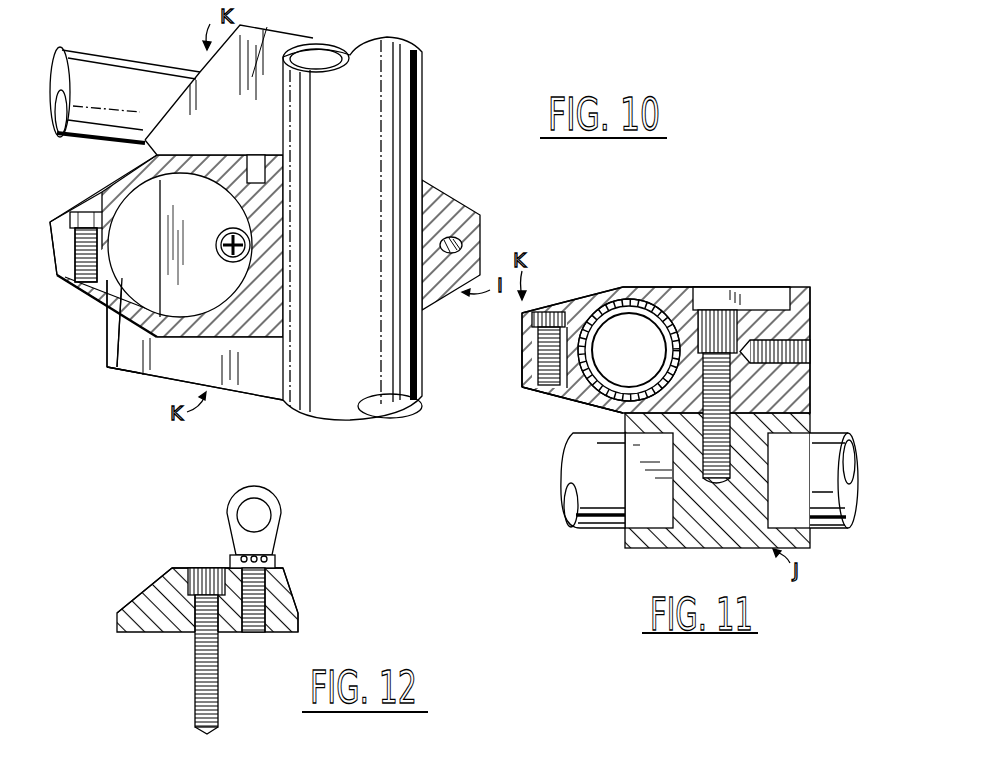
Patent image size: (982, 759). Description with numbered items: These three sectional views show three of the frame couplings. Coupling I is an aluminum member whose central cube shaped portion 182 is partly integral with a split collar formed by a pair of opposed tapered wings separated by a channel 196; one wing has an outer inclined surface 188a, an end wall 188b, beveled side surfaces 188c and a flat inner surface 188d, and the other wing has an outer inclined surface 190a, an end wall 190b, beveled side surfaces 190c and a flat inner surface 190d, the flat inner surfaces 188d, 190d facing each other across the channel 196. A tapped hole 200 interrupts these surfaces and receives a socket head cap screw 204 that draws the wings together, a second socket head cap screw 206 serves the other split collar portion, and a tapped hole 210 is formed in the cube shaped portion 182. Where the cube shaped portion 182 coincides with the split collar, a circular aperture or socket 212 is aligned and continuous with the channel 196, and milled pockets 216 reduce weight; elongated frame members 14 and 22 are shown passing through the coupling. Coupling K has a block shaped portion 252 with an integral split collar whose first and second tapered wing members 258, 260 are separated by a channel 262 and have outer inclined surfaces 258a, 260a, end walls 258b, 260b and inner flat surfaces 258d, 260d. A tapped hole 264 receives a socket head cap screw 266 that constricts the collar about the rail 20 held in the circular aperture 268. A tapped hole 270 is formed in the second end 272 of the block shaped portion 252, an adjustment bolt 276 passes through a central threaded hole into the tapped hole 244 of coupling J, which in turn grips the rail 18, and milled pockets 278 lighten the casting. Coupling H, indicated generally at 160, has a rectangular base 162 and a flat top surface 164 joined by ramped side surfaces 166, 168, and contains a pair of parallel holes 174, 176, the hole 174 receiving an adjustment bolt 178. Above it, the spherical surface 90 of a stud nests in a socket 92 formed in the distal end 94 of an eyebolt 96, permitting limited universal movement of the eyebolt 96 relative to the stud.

In FIG. 10, the first tube 14 is at (418, 96).
In FIG. 11, the rail 18 is at (846, 492).
In FIG. 11, the rail 20 is at (712, 330).
In FIG. 10, the tube 22 is at (90, 57).
In FIG. 10, the central cube shaped portion 182 is at (200, 315).
In FIG. 10, the outer inclined surface 188a is at (133, 170).
In FIG. 10, the end wall 188b is at (50, 217).
In FIG. 10, the beveled side surface 188c is at (146, 138).
In FIG. 10, the flat inner surface 188d is at (108, 246).
In FIG. 10, the outer inclined surface 190a is at (157, 338).
In FIG. 10, the end wall 190b is at (58, 281).
In FIG. 10, the beveled side surface 190c is at (92, 297).
In FIG. 10, the flat inner surface 190d is at (58, 278).
In FIG. 10, the channel 196 is at (46, 252).
In FIG. 10, the tapped hole 200 is at (95, 277).
In FIG. 10, the socket head cap screw 204 is at (160, 206).
In FIG. 10, the socket head cap screw 206 is at (452, 236).
In FIG. 10, the tapped hole 210 is at (252, 232).
In FIG. 10, the circular aperture 212 is at (105, 377).
In FIG. 10, the milled pockets 216 is at (258, 160).
In FIG. 11, the tapped hole 244 is at (733, 412).
In FIG. 11, the block shaped portion 252 is at (655, 436).
In FIG. 11, the first tapered wing member 258 is at (662, 298).
In FIG. 11, the outer inclined surface 258a is at (623, 296).
In FIG. 11, the end wall 258b is at (522, 314).
In FIG. 11, the inner flat surface 258d is at (538, 354).
In FIG. 11, the second tapered wing member 260 is at (547, 420).
In FIG. 11, the outer inclined surface 260a is at (565, 412).
In FIG. 11, the end wall 260b is at (537, 392).
In FIG. 11, the inner flat surface 260d is at (526, 364).
In FIG. 11, the channel 262 is at (603, 300).
In FIG. 11, the tapped hole 264 is at (534, 311).
In FIG. 11, the socket head cap screw 266 is at (548, 311).
In FIG. 11, the circular aperture 268 is at (657, 357).
In FIG. 11, the tapped hole 270 is at (800, 348).
In FIG. 11, the second end 272 is at (811, 378).
In FIG. 11, the adjustment bolt 276 is at (713, 326).
In FIG. 11, the milled pockets 278 is at (777, 294).
In FIG. 12, the spherical surface 90 is at (260, 521).
In FIG. 12, the socket 92 is at (262, 493).
In FIG. 12, the distal end 94 is at (264, 546).
In FIG. 12, the eyebolt 96 is at (202, 567).
In FIG. 12, the base 160 is at (288, 633).
In FIG. 12, the rectangular base 162 is at (298, 622).
In FIG. 12, the flat top surface 164 is at (182, 567).
In FIG. 12, the ramped side surface 166 is at (152, 585).
In FIG. 12, the ramped side surface 168 is at (292, 596).
In FIG. 12, the hole 174 is at (192, 613).
In FIG. 12, the hole 176 is at (236, 615).
In FIG. 12, the adjustment bolt 178 is at (203, 693).